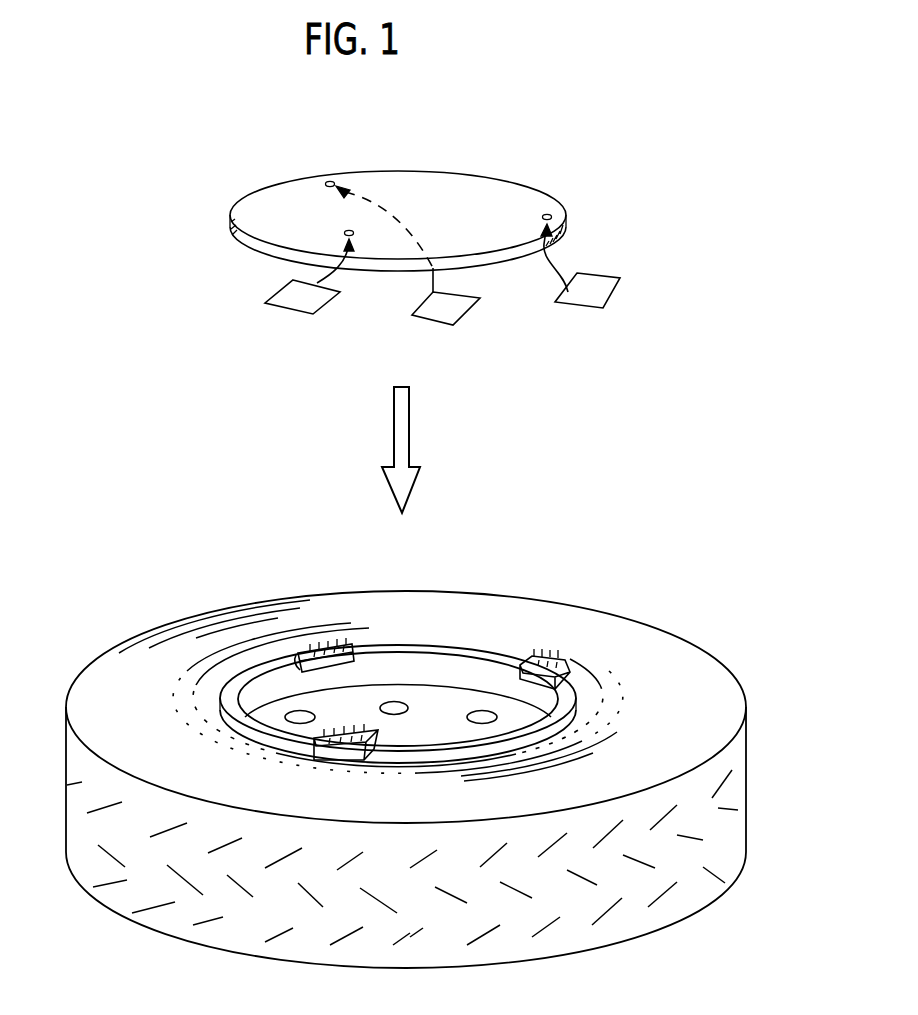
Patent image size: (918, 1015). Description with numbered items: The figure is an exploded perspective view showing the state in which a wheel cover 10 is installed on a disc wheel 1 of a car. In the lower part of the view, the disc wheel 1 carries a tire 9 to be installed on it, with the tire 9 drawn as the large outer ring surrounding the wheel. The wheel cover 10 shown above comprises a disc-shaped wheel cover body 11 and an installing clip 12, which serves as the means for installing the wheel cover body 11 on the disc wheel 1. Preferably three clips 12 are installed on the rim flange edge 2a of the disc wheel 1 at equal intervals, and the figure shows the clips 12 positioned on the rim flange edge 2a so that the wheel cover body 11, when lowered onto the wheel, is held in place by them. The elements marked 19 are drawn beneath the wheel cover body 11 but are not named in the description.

The disc wheel 1 is at (412, 758).
The rim flange edge 2a is at (506, 655).
The tire 9 is at (622, 902).
The wheel cover 10 is at (460, 244).
The wheel cover body 11 is at (490, 187).
The installing clip 12 is at (323, 650).
The electrode chips 19 is at (297, 308).